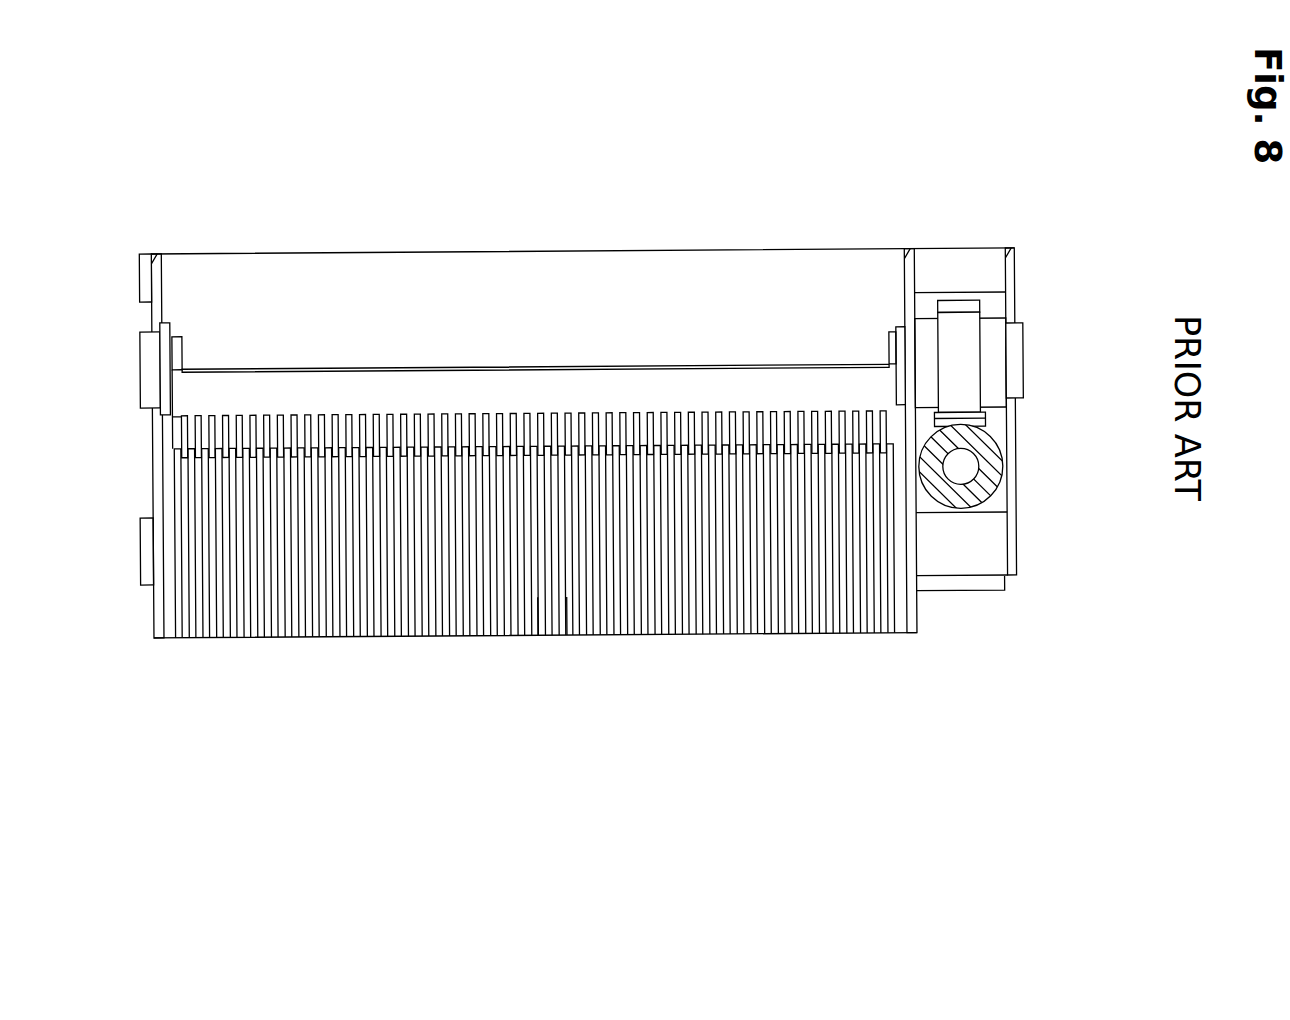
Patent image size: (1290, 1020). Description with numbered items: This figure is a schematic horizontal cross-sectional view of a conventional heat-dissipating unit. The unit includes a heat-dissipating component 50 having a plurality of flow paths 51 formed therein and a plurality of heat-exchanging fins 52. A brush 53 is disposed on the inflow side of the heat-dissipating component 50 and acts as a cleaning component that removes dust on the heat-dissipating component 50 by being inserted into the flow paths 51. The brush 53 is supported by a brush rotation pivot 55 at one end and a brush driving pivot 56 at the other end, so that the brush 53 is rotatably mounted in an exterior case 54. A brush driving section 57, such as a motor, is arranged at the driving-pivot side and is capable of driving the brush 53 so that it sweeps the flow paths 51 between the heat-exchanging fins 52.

The heat-dissipating component 50 is at (192, 621).
The flow paths 51 is at (567, 640).
The heat-exchanging fins 52 is at (703, 641).
The brush 53 is at (552, 362).
The exterior case 54 is at (153, 462).
The brush rotation pivot 55 is at (152, 375).
The brush driving pivot 56 is at (903, 333).
The brush driving section 57 is at (1052, 387).